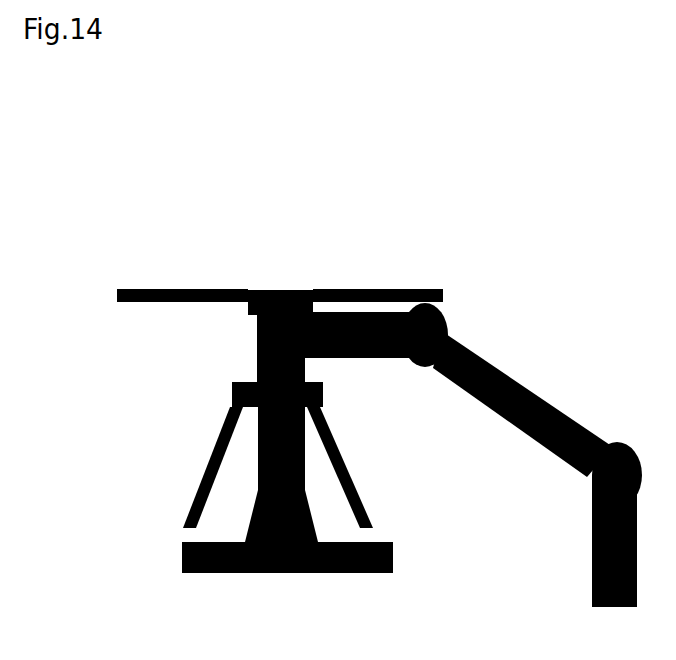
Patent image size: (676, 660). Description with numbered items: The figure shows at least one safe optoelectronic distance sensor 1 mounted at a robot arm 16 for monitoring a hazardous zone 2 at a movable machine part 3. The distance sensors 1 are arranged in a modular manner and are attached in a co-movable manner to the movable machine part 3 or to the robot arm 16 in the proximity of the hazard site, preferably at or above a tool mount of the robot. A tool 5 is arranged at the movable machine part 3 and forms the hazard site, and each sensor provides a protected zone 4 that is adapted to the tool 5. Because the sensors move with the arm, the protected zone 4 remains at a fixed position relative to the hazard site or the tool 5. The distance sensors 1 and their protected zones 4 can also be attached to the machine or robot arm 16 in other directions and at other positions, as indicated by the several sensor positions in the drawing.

The safe optoelectronic distance sensor 1 is at (247, 287).
The hazardous zone 2 is at (182, 557).
The movable machine part 3 is at (265, 367).
The protected zone 4 is at (170, 293).
The tool 5 is at (233, 385).
The robot arm 16 is at (355, 379).